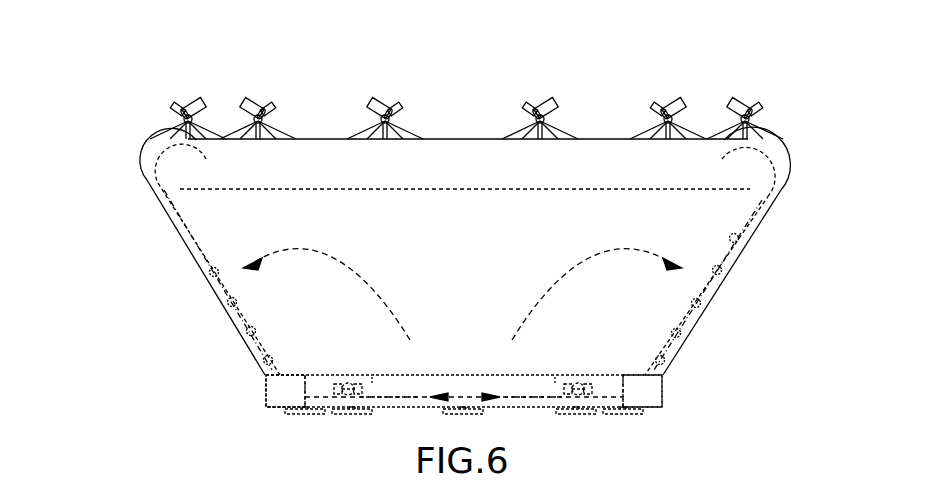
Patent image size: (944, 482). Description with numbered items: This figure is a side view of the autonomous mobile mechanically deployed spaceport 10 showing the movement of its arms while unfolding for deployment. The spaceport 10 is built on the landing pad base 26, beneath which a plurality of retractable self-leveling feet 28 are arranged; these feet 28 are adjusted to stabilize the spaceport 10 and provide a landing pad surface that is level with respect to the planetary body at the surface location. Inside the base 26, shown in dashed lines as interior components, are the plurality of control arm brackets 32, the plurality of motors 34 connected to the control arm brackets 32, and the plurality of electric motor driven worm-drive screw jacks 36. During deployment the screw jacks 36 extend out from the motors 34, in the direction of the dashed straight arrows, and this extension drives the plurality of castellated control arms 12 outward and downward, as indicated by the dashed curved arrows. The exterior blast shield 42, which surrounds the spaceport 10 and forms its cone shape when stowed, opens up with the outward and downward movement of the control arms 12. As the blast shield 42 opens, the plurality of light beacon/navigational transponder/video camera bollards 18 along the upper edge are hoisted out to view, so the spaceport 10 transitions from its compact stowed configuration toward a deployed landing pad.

The autonomous mobile mechanically deployed spaceport 10 is at (140, 88).
The castellated control arms 12 is at (180, 208).
The light beacon/navigational transponder/video camera bollards 18 is at (670, 105).
The landing pad base 26 is at (393, 412).
The retractable self-leveling feet 28 is at (305, 412).
The control arm brackets 32 is at (262, 397).
The motors 34 is at (355, 375).
The electric motor driven worm-drive screw jacks 36 is at (373, 374).
The exterior blast shield 42 is at (165, 170).